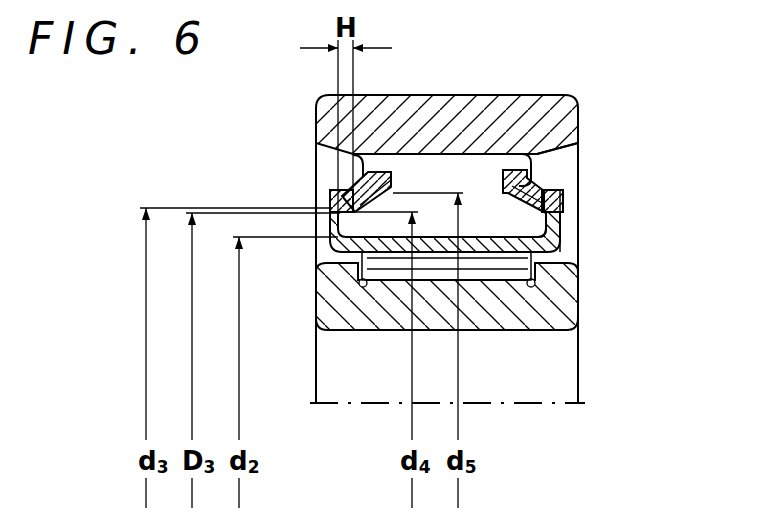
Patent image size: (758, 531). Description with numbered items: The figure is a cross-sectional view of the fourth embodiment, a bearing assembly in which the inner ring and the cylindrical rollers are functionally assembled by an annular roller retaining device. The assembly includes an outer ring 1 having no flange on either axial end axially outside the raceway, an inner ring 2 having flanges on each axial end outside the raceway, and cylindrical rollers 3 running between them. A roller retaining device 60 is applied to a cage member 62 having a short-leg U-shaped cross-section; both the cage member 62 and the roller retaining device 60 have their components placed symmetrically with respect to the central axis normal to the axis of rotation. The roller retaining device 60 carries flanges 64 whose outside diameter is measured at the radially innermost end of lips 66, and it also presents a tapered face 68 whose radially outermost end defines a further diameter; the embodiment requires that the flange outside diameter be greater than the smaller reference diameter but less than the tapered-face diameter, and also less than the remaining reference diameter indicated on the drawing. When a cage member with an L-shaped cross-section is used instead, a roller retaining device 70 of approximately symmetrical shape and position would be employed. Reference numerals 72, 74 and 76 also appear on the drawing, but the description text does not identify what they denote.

The outer ring 1 is at (328, 122).
The inner ring 2 is at (567, 313).
The cylindrical roller 3 is at (418, 170).
The roller retaining device 60 is at (521, 152).
The cage member 62 is at (503, 251).
The flange of the roller retaining member 64 is at (560, 252).
The lip 66 is at (540, 190).
The tapered face 68 is at (506, 197).
The roller retaining device 70 is at (560, 247).
The lip body 72 is at (512, 168).
The sleeve axial flange 74 is at (560, 222).
The chamfer 76 is at (562, 150).